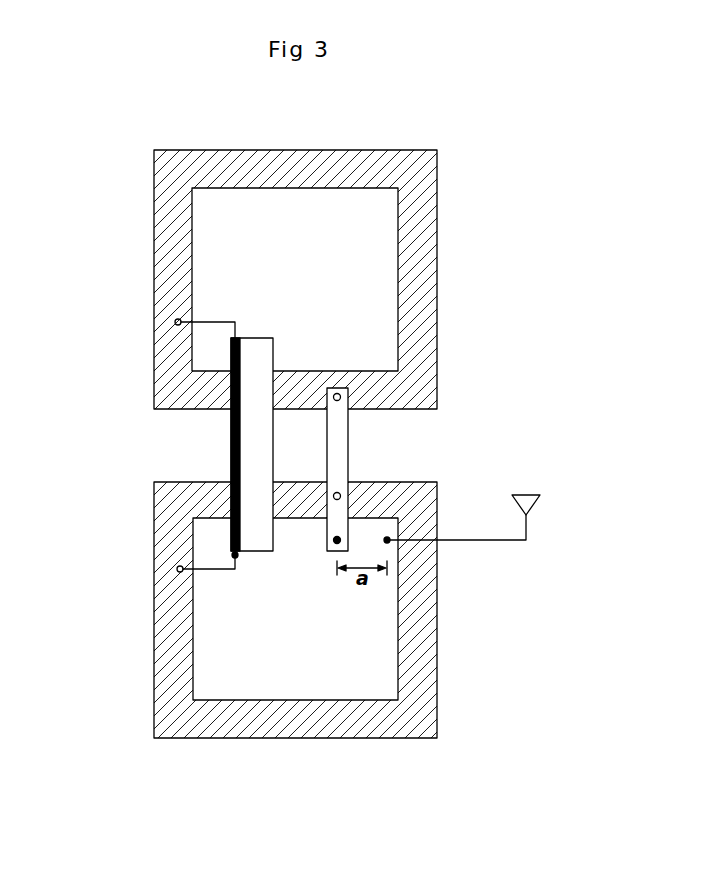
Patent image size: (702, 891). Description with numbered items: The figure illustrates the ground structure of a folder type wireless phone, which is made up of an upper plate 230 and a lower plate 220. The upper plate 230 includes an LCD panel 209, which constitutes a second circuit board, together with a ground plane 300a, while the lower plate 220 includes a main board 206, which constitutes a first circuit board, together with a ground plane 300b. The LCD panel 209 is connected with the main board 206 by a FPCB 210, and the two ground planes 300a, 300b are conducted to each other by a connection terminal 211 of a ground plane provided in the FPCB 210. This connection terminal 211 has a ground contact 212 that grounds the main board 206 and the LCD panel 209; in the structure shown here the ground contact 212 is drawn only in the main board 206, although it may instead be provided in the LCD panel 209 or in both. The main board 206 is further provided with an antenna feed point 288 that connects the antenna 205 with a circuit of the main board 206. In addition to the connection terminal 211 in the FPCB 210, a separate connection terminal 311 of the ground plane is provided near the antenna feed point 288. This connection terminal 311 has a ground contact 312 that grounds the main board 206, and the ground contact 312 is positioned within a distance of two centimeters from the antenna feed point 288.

The LCD panel 209 is at (320, 205).
The upper plate 230 is at (452, 272).
The ground plane 300a is at (163, 207).
The FPCB 210 is at (250, 419).
The connection terminal of the ground plane 211 is at (232, 448).
The ground contact 212 is at (235, 556).
The connection terminal of the ground plane 311 is at (337, 428).
The ground contact 312 is at (338, 540).
The antenna feed point 288 is at (390, 541).
The antenna 205 is at (530, 498).
The main board 206 is at (370, 683).
The lower plate 220 is at (448, 660).
The ground plane 300b is at (162, 630).